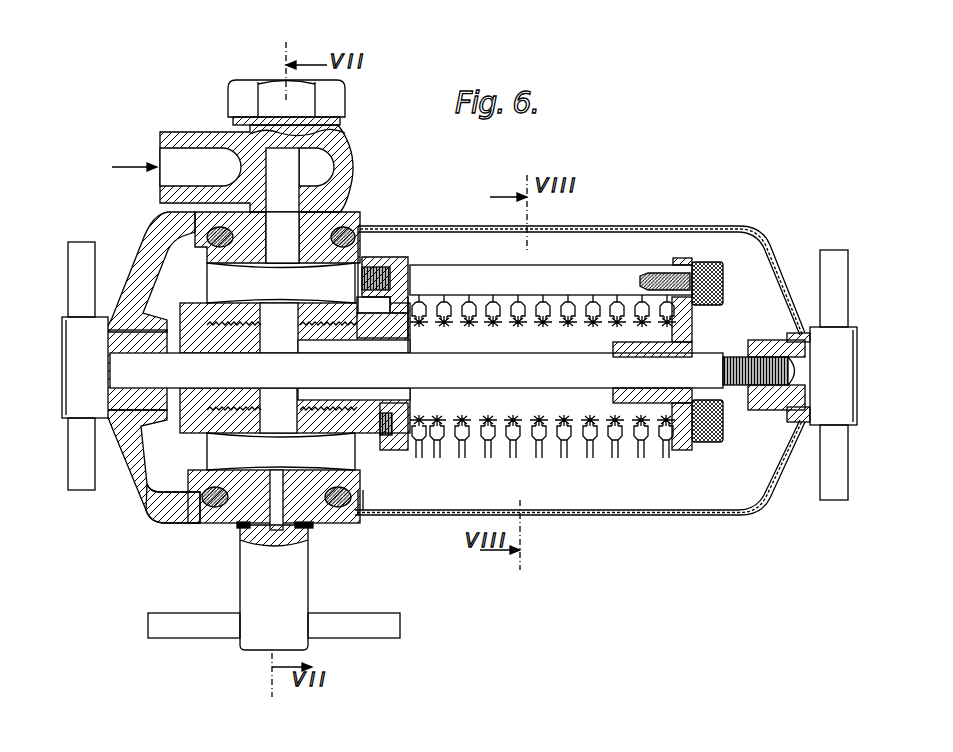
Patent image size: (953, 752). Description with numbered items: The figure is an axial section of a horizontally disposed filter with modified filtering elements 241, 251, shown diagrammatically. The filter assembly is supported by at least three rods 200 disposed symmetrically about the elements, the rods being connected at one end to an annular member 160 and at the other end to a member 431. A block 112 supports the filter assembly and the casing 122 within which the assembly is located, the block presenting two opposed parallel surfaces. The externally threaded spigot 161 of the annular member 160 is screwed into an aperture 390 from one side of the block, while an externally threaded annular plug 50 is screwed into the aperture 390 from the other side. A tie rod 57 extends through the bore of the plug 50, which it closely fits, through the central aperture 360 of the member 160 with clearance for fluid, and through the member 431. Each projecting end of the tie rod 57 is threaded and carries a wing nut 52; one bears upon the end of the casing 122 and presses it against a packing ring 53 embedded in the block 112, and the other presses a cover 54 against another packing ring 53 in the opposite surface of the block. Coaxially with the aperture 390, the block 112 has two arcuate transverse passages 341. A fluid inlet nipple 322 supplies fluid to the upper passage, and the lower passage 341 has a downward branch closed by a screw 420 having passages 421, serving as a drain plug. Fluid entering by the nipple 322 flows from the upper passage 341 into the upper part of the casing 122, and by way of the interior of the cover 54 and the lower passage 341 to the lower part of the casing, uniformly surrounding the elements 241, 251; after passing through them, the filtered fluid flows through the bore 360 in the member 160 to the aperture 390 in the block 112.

The annular plug 50 is at (228, 285).
The wing nut 52 is at (73, 365).
The packing ring 53 is at (203, 512).
The cover 54 is at (140, 473).
The tie rod 57 is at (598, 375).
The block 112 is at (346, 200).
The casing 122 is at (685, 229).
The annular member 160 is at (396, 318).
The externally threaded spigot 161 is at (384, 513).
The rod 200 is at (572, 285).
The filtering element 241 is at (487, 417).
The filtering element 251 is at (578, 417).
The fluid inlet nipple 322 is at (345, 157).
The arcuate transverse passage 341 is at (182, 313).
The central aperture 360 is at (378, 224).
The aperture 390 is at (180, 478).
The screw 420 is at (263, 617).
The passage 421 is at (253, 540).
The member 431 is at (693, 337).